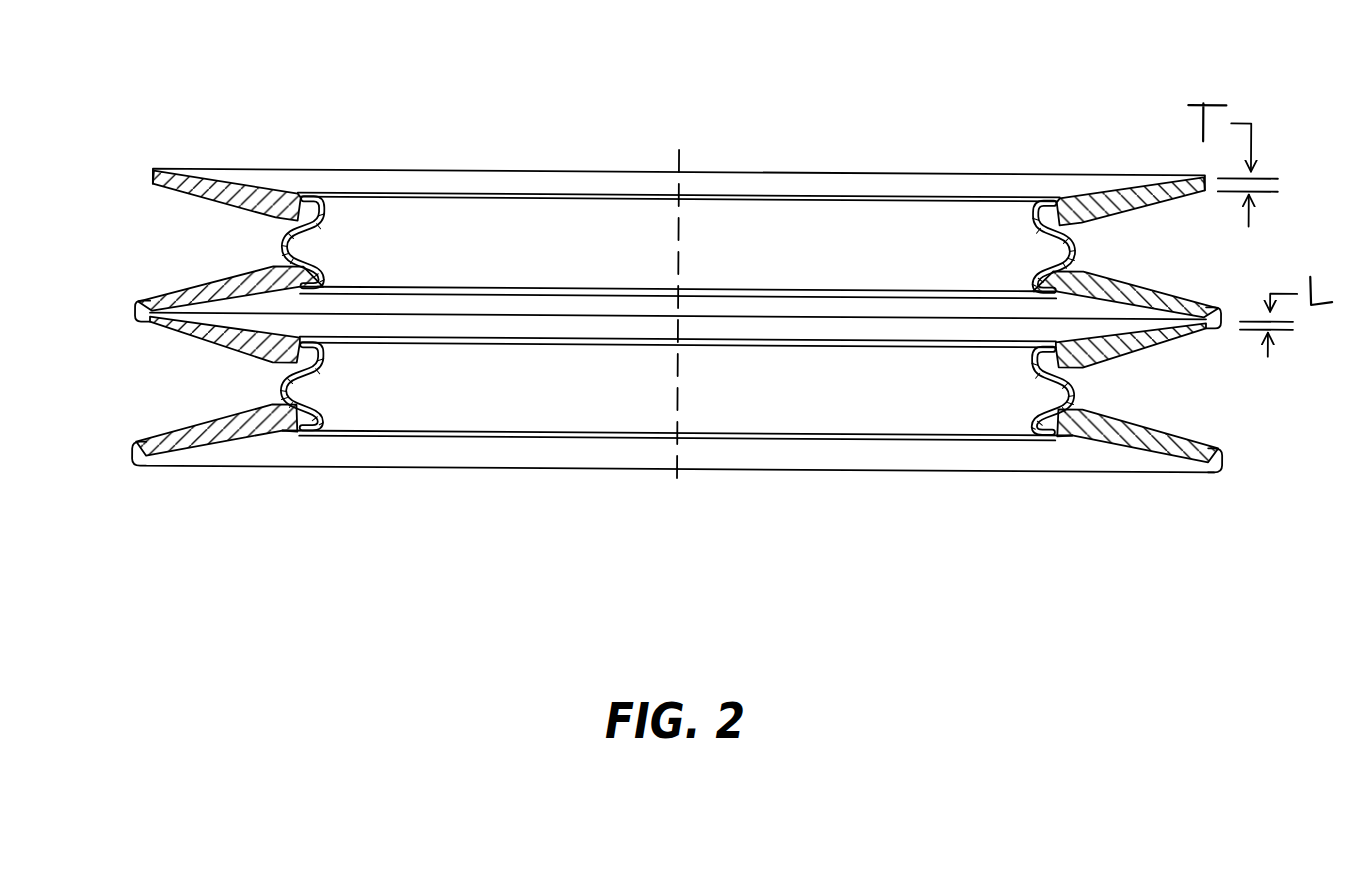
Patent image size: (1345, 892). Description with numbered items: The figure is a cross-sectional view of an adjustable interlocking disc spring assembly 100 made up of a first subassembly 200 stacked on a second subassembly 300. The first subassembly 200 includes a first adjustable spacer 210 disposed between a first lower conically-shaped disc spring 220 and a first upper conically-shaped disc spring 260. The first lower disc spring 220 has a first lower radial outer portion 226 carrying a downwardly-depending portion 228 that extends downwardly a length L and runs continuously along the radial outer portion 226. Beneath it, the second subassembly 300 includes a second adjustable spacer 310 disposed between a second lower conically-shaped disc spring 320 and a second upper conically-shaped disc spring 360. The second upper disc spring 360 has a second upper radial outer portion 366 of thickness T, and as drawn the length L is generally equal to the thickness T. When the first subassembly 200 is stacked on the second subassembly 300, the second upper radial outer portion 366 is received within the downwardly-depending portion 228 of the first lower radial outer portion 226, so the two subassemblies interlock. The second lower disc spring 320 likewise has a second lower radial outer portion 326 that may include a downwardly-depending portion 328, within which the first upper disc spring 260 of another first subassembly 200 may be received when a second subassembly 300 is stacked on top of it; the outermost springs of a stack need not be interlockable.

The adjustable interlocking disc spring assembly 100 is at (708, 281).
The first subassembly 200 is at (645, 170).
The first upper conically-shaped disc spring 260 is at (192, 206).
The first adjustable spacer 210 is at (572, 267).
The first lower conically-shaped disc spring 220 is at (699, 320).
The first lower radial outer portion 226 is at (1178, 296).
The downwardly-depending portion 228 is at (1204, 324).
The second upper conically-shaped disc spring 360 is at (187, 343).
The second upper radial outer portion 366 is at (1167, 335).
The second adjustable spacer 310 is at (565, 407).
The second subassembly 300 is at (699, 460).
The second lower conically-shaped disc spring 320 is at (183, 430).
The second lower radial outer portion 326 is at (1174, 437).
The downwardly-depending portion 328 is at (1227, 470).